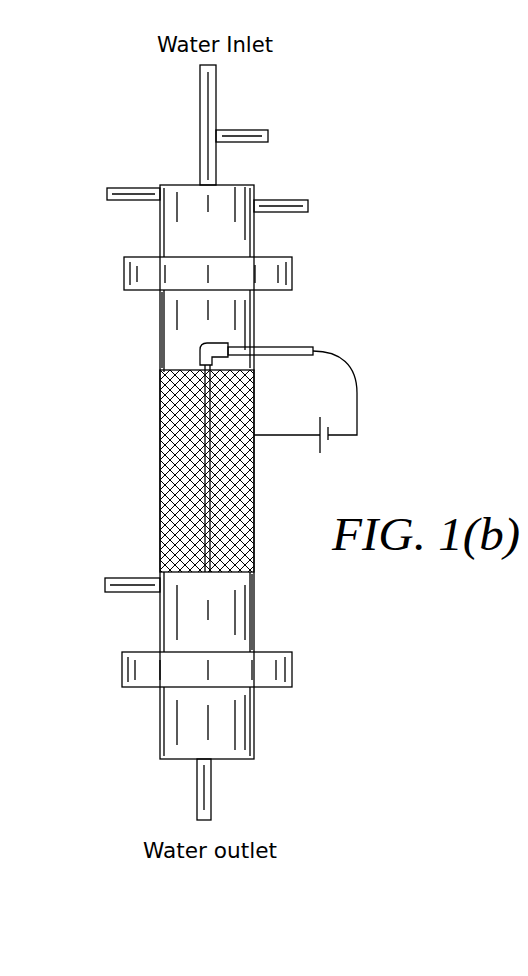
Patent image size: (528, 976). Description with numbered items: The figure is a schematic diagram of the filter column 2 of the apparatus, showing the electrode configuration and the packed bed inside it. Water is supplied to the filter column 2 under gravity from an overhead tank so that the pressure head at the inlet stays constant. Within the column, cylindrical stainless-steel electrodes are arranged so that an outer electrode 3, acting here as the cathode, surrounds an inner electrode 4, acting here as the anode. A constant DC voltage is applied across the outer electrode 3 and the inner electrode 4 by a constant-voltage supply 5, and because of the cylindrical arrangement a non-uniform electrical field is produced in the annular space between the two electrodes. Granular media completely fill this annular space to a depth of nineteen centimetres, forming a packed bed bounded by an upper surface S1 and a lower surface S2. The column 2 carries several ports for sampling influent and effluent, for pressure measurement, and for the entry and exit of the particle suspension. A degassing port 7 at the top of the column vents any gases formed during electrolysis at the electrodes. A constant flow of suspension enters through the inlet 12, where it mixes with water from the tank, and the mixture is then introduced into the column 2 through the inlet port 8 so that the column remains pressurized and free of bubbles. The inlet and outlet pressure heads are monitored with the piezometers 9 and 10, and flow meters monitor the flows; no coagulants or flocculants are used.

The filter column 2 is at (146, 610).
The outer electrode 3 is at (160, 318).
The inner electrode 4 is at (283, 345).
The constant-voltage supply 5 is at (320, 442).
The degassing port 7 is at (284, 198).
The inlet port 8 is at (200, 165).
The piezometer 9 is at (118, 188).
The piezometer 10 is at (130, 578).
The inlet 12 is at (248, 130).
The upper surface S1 is at (160, 352).
The lower surface S2 is at (254, 605).